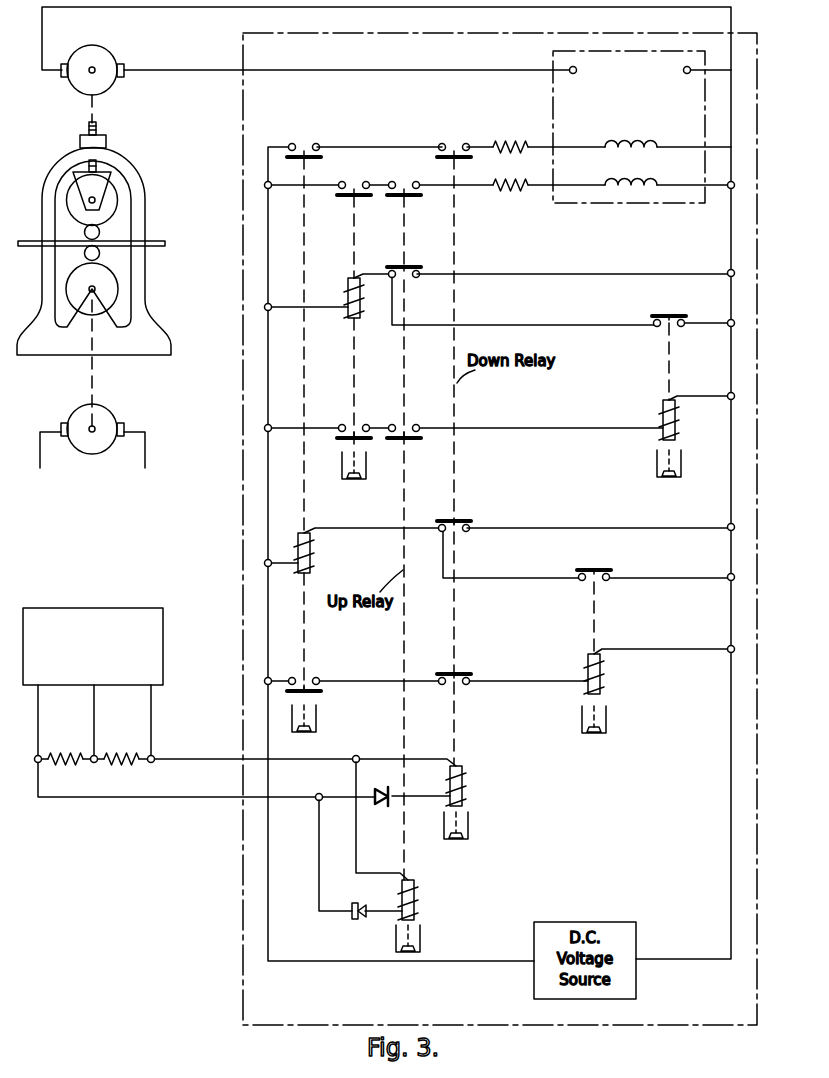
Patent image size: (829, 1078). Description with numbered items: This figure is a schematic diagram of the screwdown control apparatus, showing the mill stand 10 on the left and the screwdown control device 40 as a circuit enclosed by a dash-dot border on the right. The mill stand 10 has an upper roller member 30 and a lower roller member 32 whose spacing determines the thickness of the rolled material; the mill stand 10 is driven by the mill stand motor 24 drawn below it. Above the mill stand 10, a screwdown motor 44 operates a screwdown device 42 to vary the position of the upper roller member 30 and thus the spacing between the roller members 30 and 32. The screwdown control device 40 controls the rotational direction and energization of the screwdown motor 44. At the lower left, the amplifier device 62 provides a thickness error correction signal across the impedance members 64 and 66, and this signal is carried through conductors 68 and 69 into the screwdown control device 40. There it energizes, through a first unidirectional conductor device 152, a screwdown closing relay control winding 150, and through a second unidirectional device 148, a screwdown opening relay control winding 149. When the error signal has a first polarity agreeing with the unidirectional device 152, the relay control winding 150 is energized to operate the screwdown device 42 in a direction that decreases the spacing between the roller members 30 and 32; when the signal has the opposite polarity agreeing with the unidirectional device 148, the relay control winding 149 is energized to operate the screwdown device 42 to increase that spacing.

The mill stand 10 is at (173, 211).
The mill stand motor 24 is at (105, 409).
The upper roller member 30 is at (100, 232).
The roller member 32 is at (100, 253).
The screwdown control device 40 is at (243, 562).
The screwdown device 42 is at (80, 142).
The screwdown motor 44 is at (110, 52).
The amplifier device 62 is at (177, 646).
The impedance member 64 is at (139, 751).
The impedance member 66 is at (79, 751).
The conductor 68 is at (228, 758).
The conductor 69 is at (198, 796).
The second unidirectional conductor device 148 is at (365, 920).
The screwdown opening relay control winding 149 is at (418, 892).
The screwdown closing relay control winding 150 is at (463, 778).
The first unidirectional conductor device 152 is at (391, 785).